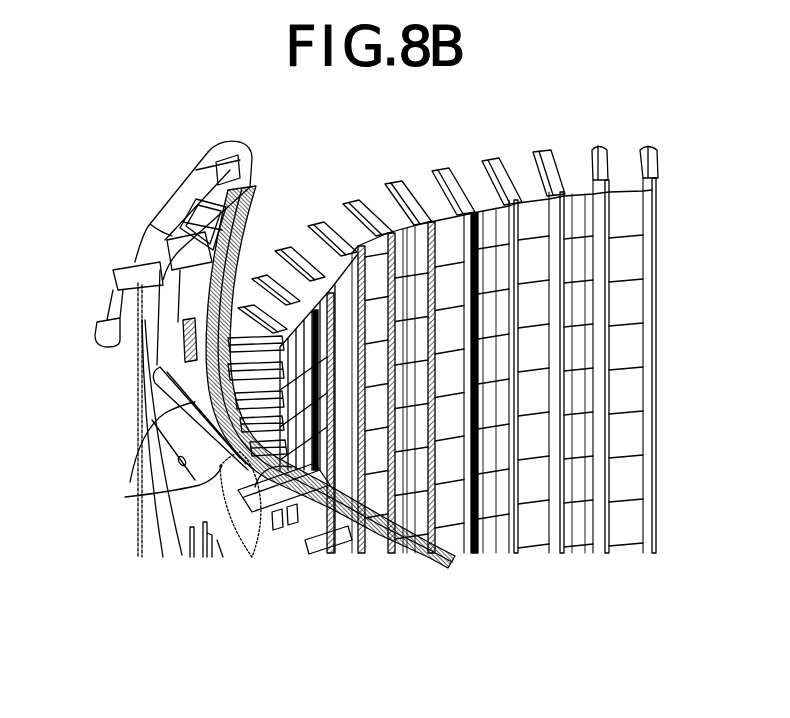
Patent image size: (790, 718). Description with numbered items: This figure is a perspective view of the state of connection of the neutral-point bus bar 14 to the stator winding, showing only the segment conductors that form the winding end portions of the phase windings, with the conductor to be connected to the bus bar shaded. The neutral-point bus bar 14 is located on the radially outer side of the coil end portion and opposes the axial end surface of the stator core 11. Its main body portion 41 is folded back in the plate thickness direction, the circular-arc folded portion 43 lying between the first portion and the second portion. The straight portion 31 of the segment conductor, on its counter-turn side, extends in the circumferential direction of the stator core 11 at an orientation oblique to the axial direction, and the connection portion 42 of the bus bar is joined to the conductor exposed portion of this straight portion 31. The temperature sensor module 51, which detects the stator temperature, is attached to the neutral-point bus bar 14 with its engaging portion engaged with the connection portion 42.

The stator core 11 is at (312, 168).
The neutral-point bus bar 14 is at (125, 497).
The straight portion 31 is at (255, 240).
The main body portion 41 is at (145, 427).
The connection portion 42 is at (152, 368).
The folded portion 43 is at (225, 158).
The temperature sensor module 51 is at (148, 262).